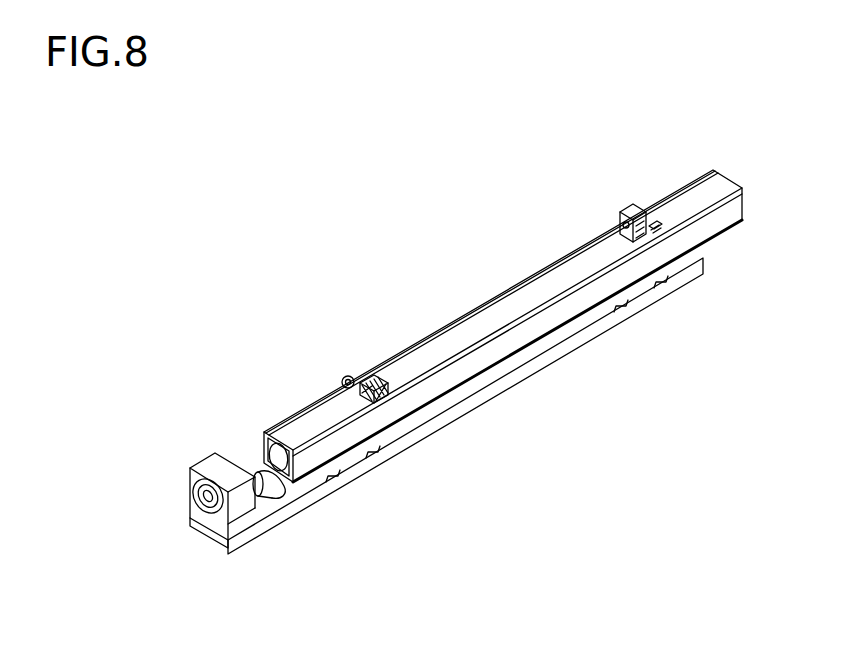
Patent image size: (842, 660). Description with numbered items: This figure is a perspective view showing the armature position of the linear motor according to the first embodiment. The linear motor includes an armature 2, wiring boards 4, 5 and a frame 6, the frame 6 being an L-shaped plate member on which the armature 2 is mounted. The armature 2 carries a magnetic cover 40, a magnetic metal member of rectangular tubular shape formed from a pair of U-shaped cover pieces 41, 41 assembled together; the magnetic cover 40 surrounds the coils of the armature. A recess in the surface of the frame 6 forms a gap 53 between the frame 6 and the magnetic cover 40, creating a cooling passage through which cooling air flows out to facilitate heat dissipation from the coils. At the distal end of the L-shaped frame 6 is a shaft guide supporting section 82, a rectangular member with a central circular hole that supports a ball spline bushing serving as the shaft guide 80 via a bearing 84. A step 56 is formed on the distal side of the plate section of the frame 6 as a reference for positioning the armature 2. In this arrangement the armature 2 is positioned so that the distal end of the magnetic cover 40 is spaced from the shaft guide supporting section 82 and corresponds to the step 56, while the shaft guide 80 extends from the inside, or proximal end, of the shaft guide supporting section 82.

The armature 2 is at (415, 342).
The wiring board 4 is at (620, 226).
The wiring board 5 is at (377, 370).
The frame 6 is at (480, 395).
The magnetic cover 40 is at (458, 320).
The cover piece 41 is at (492, 303).
The gap 53 is at (410, 425).
The step 56 is at (275, 488).
The shaft guide 80 is at (255, 475).
The shaft guide supporting section 82 is at (200, 466).
The bearing 84 is at (228, 541).